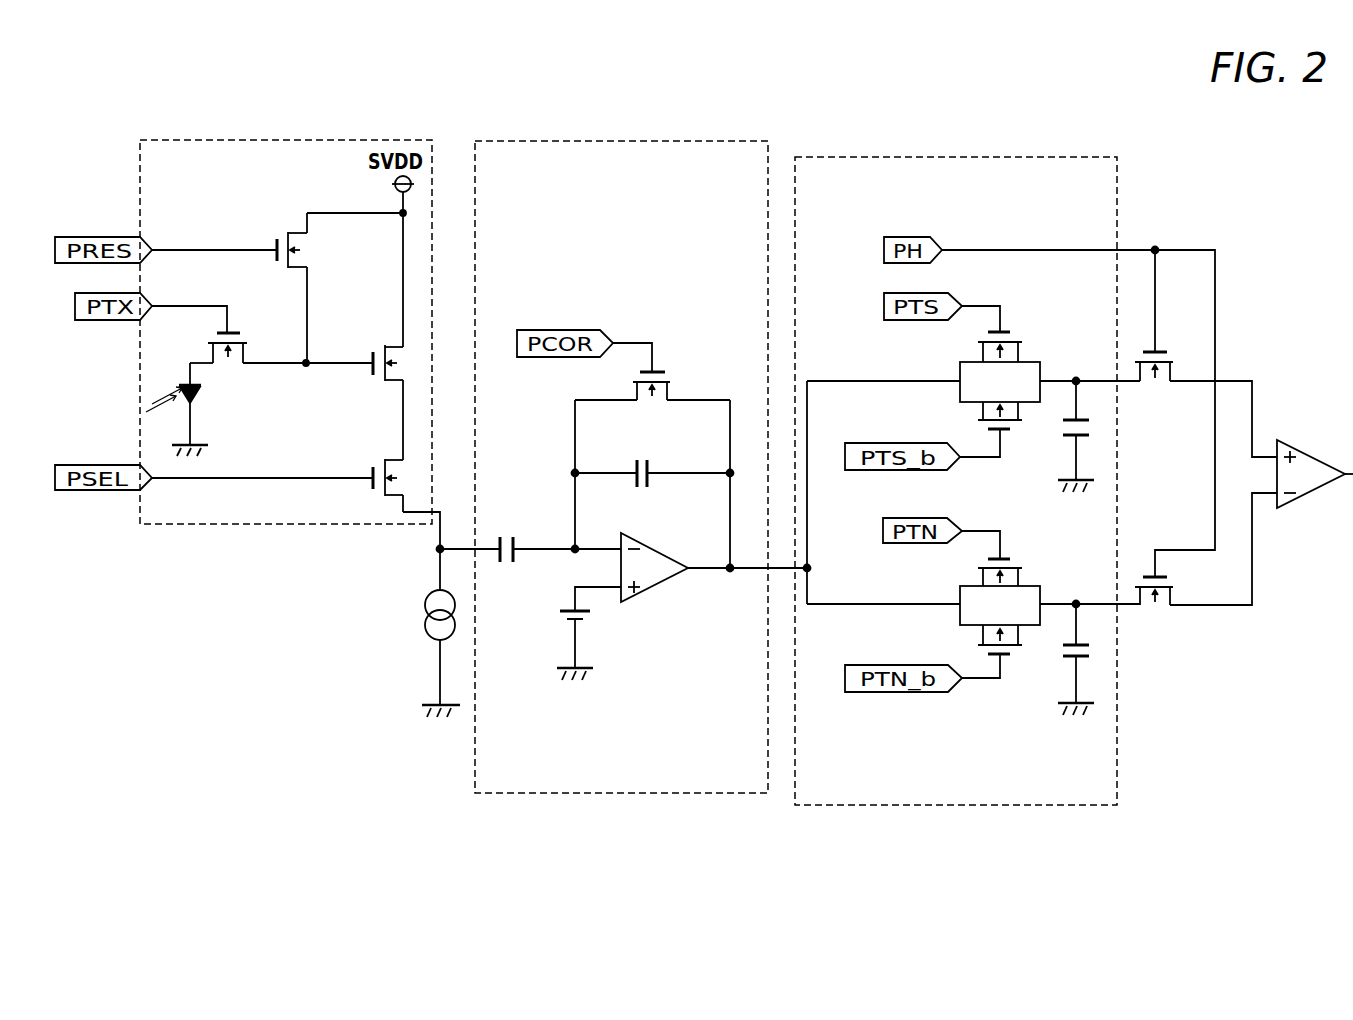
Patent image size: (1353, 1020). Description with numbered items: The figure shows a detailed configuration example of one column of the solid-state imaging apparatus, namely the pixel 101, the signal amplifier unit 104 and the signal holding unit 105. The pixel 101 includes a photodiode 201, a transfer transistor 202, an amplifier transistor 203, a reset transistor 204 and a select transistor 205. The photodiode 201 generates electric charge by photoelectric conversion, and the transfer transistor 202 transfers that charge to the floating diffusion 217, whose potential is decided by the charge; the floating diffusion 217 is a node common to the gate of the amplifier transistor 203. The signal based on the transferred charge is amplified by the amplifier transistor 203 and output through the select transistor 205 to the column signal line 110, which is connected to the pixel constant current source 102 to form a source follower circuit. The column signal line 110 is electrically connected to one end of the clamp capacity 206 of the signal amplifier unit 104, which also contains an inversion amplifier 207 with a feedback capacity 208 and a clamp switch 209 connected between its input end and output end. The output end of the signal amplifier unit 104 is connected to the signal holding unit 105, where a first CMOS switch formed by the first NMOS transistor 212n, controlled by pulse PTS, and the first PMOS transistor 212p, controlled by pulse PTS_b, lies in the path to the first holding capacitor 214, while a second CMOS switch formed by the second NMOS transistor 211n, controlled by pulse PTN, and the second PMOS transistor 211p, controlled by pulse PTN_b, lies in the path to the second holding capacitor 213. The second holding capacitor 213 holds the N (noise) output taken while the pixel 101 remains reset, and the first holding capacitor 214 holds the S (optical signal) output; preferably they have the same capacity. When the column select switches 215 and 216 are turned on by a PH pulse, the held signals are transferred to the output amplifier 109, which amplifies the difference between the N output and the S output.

The pixel 101 is at (237, 140).
The signal amplifier unit 104 is at (573, 141).
The signal holding unit 105 is at (900, 157).
The output amplifier 109 is at (1313, 455).
The column signal line 110 is at (438, 532).
The pixel constant current source 102 is at (425, 618).
The photodiode 201 is at (200, 388).
The transfer transistor 202 is at (245, 340).
The amplifier transistor 203 is at (372, 345).
The reset transistor 204 is at (276, 233).
The select transistor 205 is at (372, 455).
The floating diffusion 217 is at (306, 366).
The clamp capacity 206 is at (503, 533).
The inversion amplifier 207 is at (653, 585).
The feedback capacity 208 is at (645, 455).
The clamp switch 209 is at (668, 378).
The second NMOS transistor 211n is at (1012, 565).
The second PMOS transistor 211p is at (985, 653).
The first NMOS transistor 212n is at (1012, 340).
The first PMOS transistor 212p is at (985, 427).
The second holding capacitor 213 is at (1060, 652).
The first holding capacitor 214 is at (1062, 427).
The column select switch 215 is at (1150, 570).
The column select switch 216 is at (1168, 357).